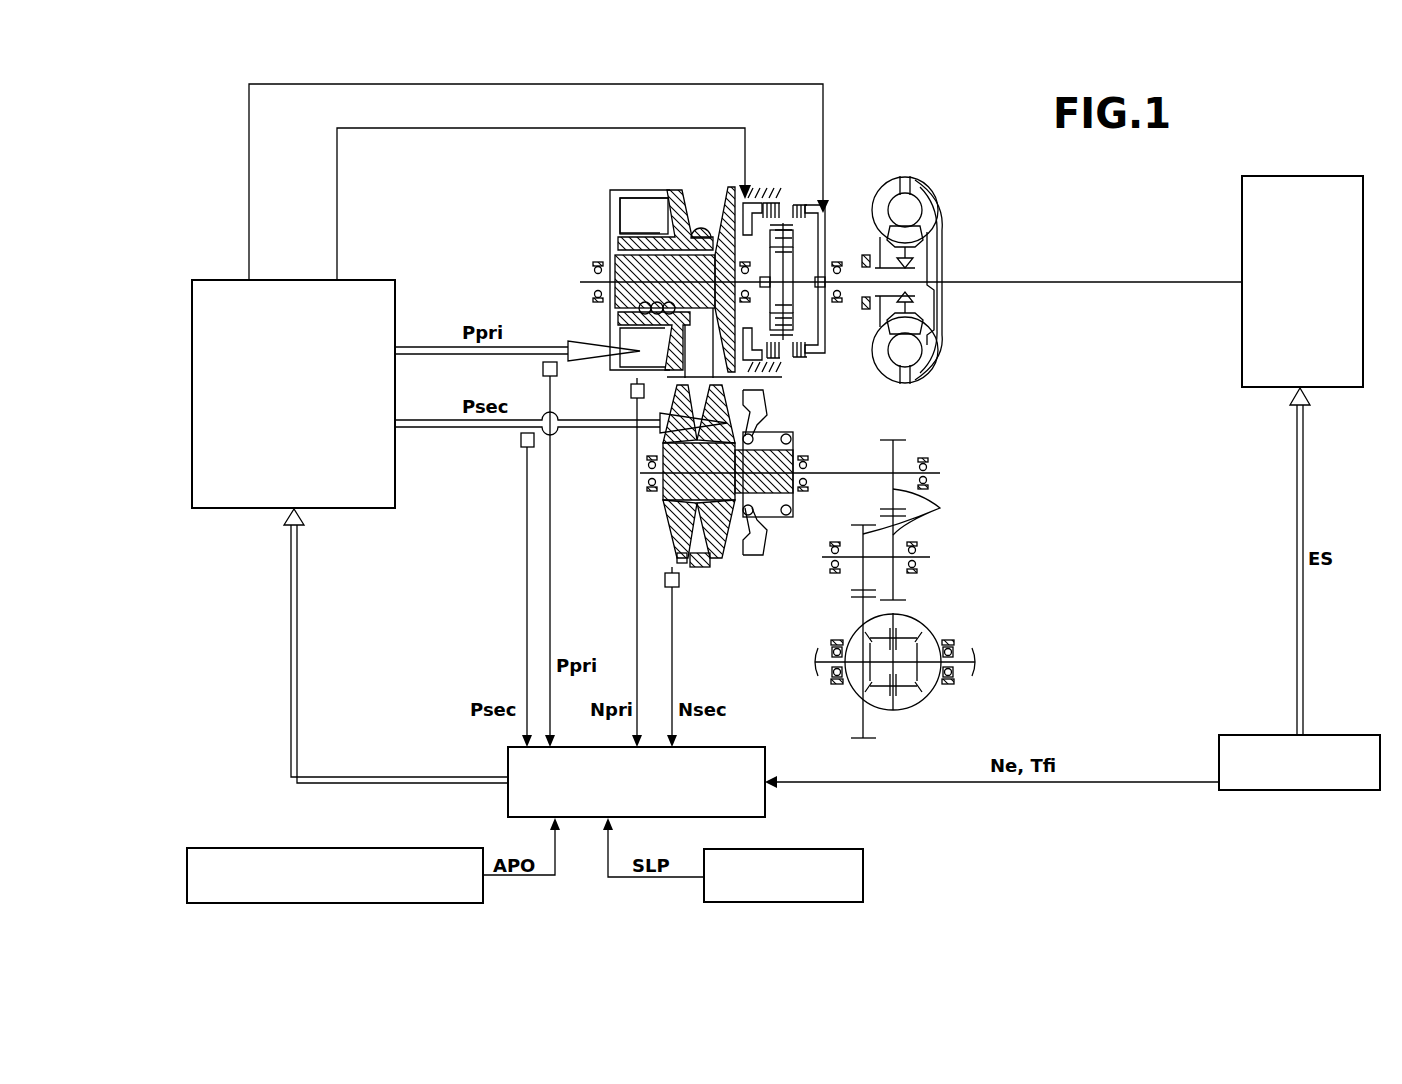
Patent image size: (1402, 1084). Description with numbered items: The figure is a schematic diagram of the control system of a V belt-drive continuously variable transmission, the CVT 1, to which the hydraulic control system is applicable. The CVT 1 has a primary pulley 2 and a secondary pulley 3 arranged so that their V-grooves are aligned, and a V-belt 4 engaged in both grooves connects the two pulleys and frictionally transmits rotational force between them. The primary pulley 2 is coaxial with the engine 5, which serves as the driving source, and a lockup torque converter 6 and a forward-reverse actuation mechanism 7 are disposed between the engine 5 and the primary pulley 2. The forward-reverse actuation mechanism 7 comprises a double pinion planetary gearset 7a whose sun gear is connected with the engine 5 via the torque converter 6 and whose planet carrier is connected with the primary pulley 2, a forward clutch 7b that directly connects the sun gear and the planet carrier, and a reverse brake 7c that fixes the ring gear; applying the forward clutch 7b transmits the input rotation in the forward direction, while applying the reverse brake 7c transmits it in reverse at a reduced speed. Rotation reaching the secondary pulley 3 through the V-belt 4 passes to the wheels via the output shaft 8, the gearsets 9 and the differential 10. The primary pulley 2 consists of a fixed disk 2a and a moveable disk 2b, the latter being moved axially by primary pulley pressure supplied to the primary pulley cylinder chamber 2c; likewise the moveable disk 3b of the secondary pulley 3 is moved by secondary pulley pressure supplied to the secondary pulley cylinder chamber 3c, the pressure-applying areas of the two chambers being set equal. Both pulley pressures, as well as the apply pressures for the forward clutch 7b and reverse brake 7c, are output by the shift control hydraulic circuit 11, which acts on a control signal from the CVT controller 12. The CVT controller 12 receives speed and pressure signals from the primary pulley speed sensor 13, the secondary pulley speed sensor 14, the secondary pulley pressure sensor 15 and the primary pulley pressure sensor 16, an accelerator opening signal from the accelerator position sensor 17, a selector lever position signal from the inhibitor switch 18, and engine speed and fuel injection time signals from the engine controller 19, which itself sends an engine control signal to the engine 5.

The V belt-drive continuously variable transmission 1 is at (640, 172).
The primary pulley 2 is at (644, 253).
The fixed disk 2a is at (736, 192).
The moveable disk 2b is at (678, 196).
The primary pulley cylinder chamber 2c is at (630, 213).
The secondary pulley 3 is at (727, 518).
The moveable disk 3b is at (718, 553).
The secondary pulley cylinder chamber 3c is at (733, 543).
The V-belt 4 is at (703, 232).
The engine 5 is at (1323, 176).
The lockup torque converter 6 is at (918, 168).
The forward-reverse actuation mechanism 7 is at (792, 234).
The double pinion planetary gearset 7a is at (788, 208).
The forward clutch 7b is at (805, 207).
The reverse brake 7c is at (780, 190).
The output shaft 8 is at (845, 470).
The gearsets 9 is at (910, 512).
The differential 10 is at (948, 618).
The shift control hydraulic circuit 11 is at (370, 280).
The CVT controller 12 is at (508, 762).
The primary pulley speed sensor 13 is at (630, 393).
The secondary pulley speed sensor 14 is at (681, 582).
The secondary pulley pressure sensor 15 is at (521, 441).
The primary pulley pressure sensor 16 is at (543, 370).
The accelerator position sensor 17 is at (408, 848).
The inhibitor switch 18 is at (757, 849).
The engine controller 19 is at (1333, 735).